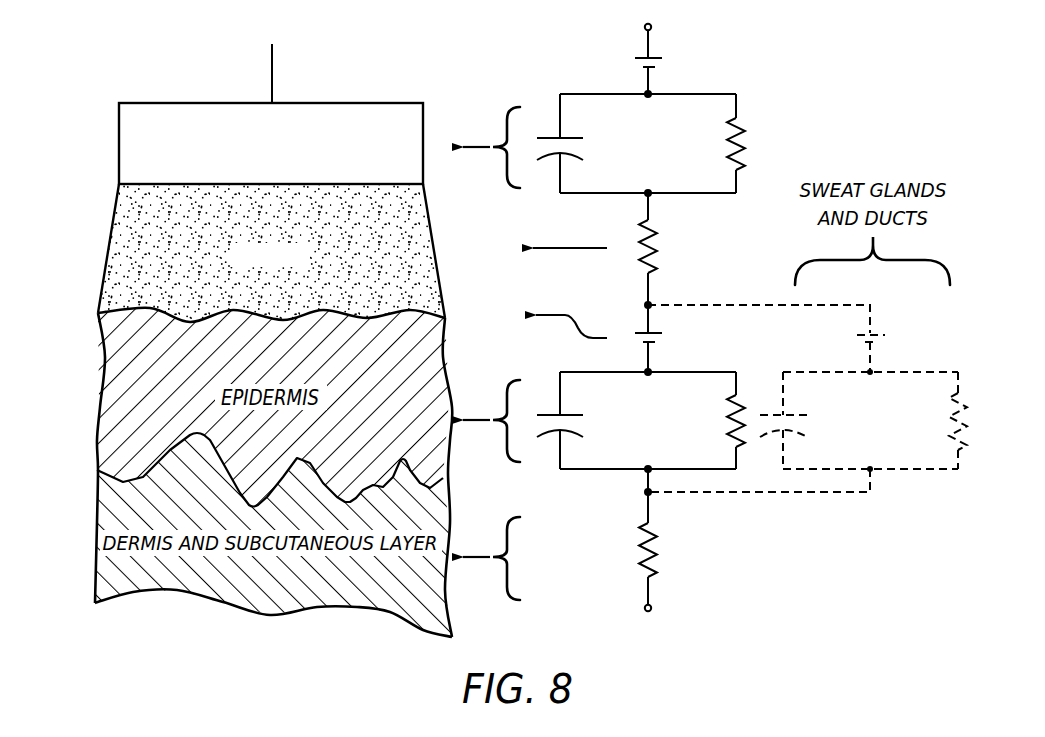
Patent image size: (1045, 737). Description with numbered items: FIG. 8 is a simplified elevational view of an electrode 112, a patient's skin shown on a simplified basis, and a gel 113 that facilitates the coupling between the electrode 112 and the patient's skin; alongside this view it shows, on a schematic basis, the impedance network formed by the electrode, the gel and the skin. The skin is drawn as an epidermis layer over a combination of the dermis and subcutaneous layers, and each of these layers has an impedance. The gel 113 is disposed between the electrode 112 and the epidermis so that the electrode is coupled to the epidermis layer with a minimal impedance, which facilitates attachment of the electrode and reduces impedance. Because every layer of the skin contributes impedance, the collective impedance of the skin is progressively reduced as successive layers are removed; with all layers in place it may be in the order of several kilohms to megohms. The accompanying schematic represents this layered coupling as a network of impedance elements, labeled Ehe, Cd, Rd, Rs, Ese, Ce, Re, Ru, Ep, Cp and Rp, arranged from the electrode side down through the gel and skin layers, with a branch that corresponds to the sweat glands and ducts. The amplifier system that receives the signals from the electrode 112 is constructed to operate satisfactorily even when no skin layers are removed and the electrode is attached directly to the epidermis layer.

The electrode 112 is at (312, 103).
The gel 113 is at (418, 263).
The half-cell potential of electrode Ehe is at (675, 59).
The double-layer capacitance of electrode/gel interface Cd is at (586, 143).
The leakage resistance of electrode/gel interface Rd is at (766, 143).
The gel series resistance Rs is at (671, 263).
The skin/electrolyte potential Ese is at (674, 348).
The epidermis capacitance Ce is at (582, 420).
The epidermis resistance Re is at (711, 420).
The dermis and subcutaneous layer resistance Ru is at (674, 540).
The sweat gland potential Ep is at (896, 348).
The sweat gland capacitance Cp is at (807, 420).
The sweat gland resistance Rp is at (942, 420).